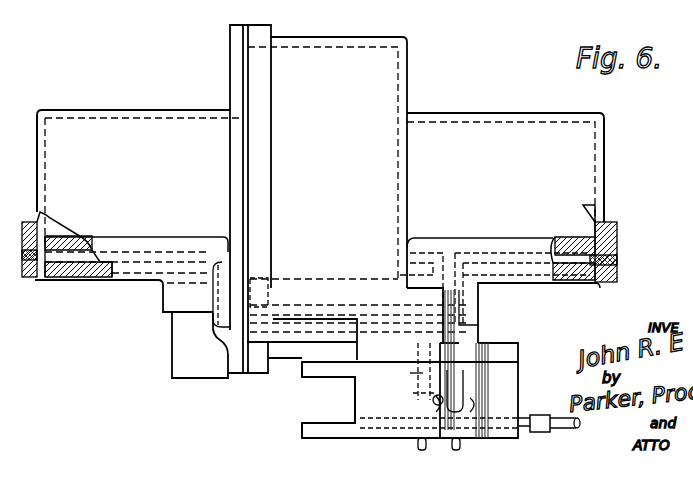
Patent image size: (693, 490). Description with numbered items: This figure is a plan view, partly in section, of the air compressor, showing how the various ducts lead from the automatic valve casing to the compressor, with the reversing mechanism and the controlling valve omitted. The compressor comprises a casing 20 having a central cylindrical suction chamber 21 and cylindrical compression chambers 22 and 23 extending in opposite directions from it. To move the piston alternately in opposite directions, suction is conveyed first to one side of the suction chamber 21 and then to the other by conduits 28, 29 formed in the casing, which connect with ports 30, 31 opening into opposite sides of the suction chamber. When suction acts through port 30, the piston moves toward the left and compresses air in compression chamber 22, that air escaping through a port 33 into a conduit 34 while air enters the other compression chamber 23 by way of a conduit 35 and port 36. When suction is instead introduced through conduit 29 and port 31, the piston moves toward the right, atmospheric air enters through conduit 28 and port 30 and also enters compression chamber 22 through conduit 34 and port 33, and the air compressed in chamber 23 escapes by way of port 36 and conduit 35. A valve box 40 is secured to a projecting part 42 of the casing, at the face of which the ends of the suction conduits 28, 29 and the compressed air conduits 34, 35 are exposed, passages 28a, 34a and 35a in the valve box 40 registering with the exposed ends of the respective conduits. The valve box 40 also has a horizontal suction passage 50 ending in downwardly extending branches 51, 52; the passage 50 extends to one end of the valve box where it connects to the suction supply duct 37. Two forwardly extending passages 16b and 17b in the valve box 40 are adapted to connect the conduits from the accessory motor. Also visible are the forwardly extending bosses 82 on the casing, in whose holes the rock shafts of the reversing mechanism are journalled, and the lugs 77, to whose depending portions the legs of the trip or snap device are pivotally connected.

The casing 20 is at (476, 111).
The central cylindrical suction chamber 21 is at (327, 162).
The cylindrical compression chamber 22 is at (140, 180).
The cylindrical compression chamber 23 is at (505, 167).
The conduit 28 is at (288, 305).
The passage 28a is at (435, 393).
The conduit 29 is at (423, 253).
The port 30 is at (251, 278).
The port 31 is at (400, 257).
The port 33 is at (47, 241).
The conduit 34 is at (167, 253).
The passage 34a is at (423, 372).
The conduit 35 is at (492, 253).
The passage 35a is at (518, 362).
The port 36 is at (563, 237).
The suction supply duct 37 is at (532, 420).
The valve box 40 is at (507, 382).
The projecting part 42 is at (459, 323).
The horizontal suction passage 50 is at (510, 403).
The branch 51 is at (388, 403).
The branch 52 is at (486, 421).
The lug 77 is at (325, 422).
The forwardly extending boss 82 is at (200, 345).
The forwardly extending passage 16b is at (418, 446).
The forwardly extending passage 17b is at (460, 446).